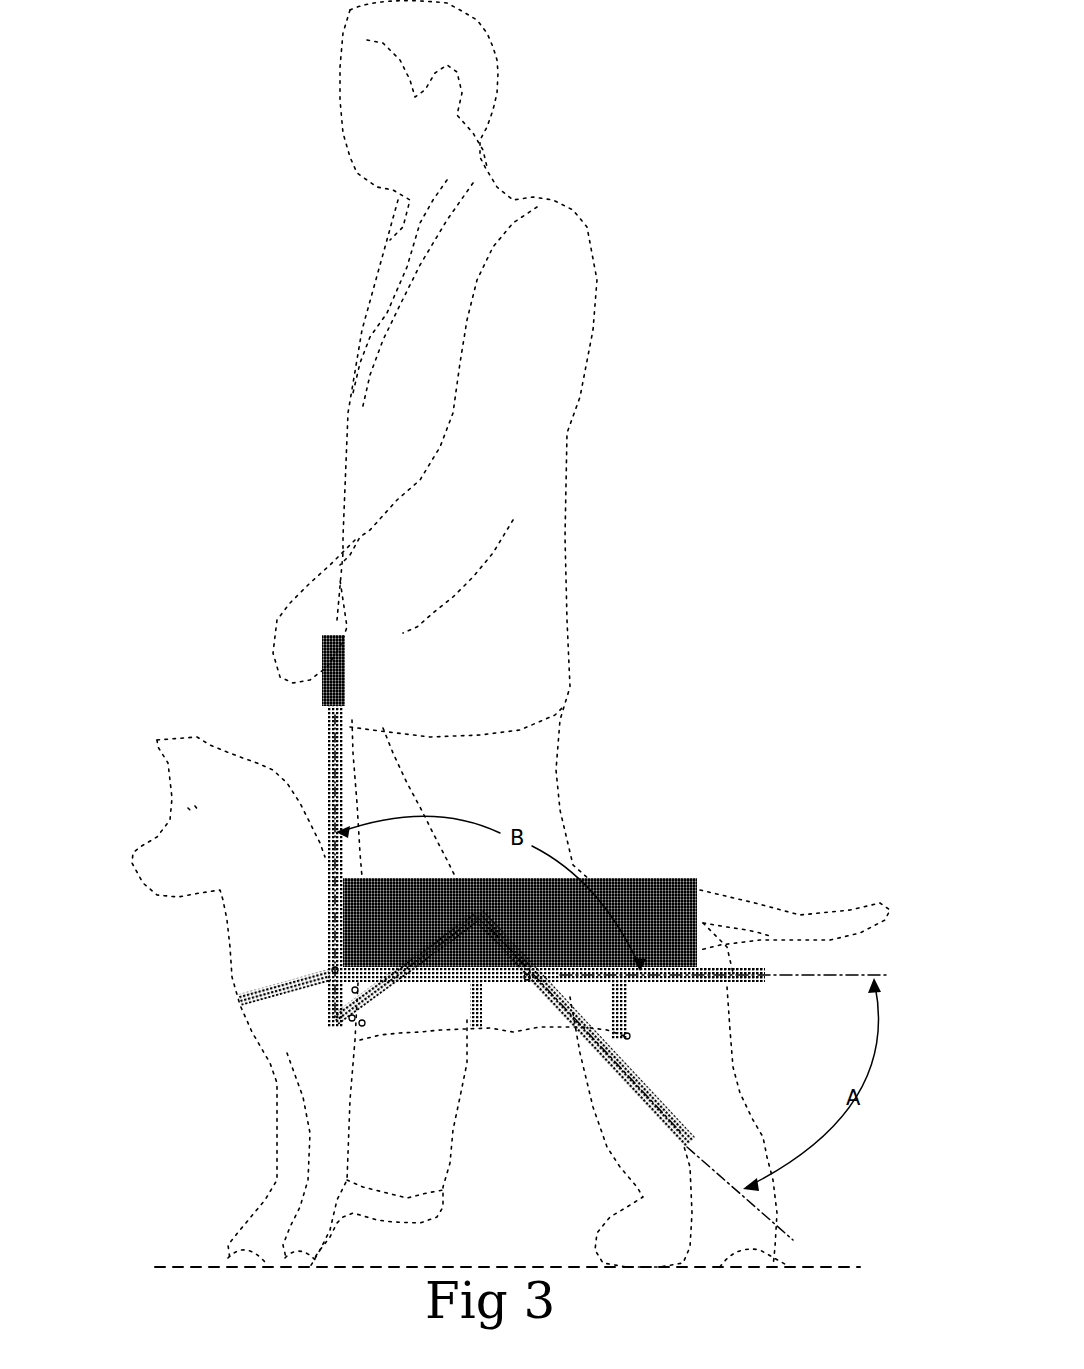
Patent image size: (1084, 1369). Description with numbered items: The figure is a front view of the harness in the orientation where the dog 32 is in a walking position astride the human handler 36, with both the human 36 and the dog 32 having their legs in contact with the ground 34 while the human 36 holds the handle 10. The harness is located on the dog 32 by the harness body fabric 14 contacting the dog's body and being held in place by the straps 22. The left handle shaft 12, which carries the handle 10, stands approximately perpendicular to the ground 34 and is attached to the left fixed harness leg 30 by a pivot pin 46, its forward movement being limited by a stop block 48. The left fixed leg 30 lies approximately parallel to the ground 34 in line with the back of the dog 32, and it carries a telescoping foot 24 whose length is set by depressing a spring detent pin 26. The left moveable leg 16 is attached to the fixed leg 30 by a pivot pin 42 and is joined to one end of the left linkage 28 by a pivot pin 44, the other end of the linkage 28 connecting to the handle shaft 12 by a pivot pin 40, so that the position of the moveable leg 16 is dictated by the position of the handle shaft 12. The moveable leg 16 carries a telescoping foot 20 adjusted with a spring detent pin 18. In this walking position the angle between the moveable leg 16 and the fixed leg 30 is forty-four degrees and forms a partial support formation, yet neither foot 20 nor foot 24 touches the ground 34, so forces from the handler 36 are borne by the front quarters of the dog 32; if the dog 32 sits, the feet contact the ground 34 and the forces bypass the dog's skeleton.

The handle 10 is at (331, 662).
The left handle shaft 12 is at (334, 723).
The harness body fabric 14 is at (686, 880).
The left moveable leg 16 is at (564, 1012).
The spring detent pin 18 is at (628, 1036).
The telescoping foot 20 is at (678, 1118).
The straps 22 is at (247, 994).
The telescoping foot 24 is at (753, 981).
The spring detent pin 26 is at (630, 992).
The left linkage 28 is at (362, 1023).
The left fixed harness leg 30 is at (692, 968).
The dog 32 is at (190, 783).
The ground 34 is at (215, 1265).
The human handler 36 is at (485, 48).
The pivot pin 40 is at (352, 1018).
The pivot pin 42 is at (527, 978).
The pivot pin 44 is at (478, 933).
The pivot pin 46 is at (334, 970).
The stop block 48 is at (356, 990).